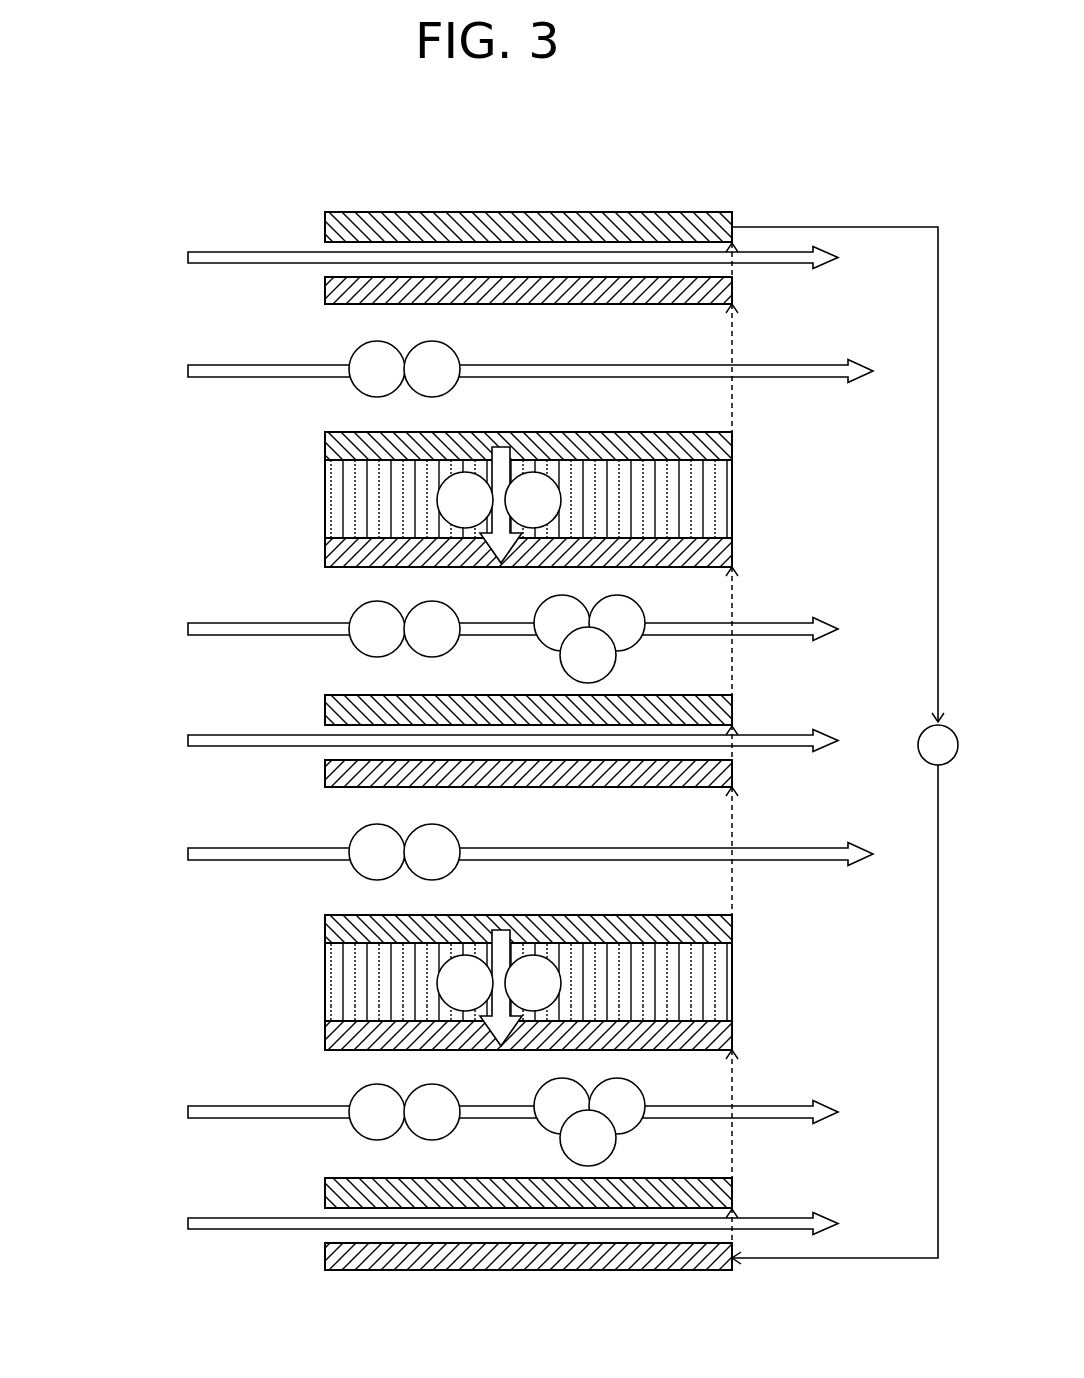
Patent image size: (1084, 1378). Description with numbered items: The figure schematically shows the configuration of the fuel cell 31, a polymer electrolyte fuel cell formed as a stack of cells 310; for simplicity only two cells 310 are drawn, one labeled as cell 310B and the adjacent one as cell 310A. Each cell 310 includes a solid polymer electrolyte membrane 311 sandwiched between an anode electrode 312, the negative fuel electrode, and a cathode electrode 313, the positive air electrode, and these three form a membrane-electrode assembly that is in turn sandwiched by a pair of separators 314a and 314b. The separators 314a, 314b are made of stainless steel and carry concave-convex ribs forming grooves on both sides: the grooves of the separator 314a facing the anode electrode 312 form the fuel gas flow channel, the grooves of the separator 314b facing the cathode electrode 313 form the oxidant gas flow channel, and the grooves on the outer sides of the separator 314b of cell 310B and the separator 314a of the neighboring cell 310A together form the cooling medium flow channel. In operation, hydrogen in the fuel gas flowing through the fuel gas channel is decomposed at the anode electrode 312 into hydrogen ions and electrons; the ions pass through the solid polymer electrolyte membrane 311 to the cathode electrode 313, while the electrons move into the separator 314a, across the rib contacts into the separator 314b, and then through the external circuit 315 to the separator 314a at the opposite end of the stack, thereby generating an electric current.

The fuel cell 31 is at (180, 163).
The cell 310 is at (443, 741).
The cell 310A is at (147, 1215).
The cell 310B is at (147, 272).
The solid polymer electrolyte membrane 311 is at (345, 983).
The anode electrode 312 is at (606, 927).
The cathode electrode 313 is at (606, 1041).
The separator 314a is at (606, 1262).
The separator 314b is at (656, 1190).
The external circuit 315 is at (938, 520).